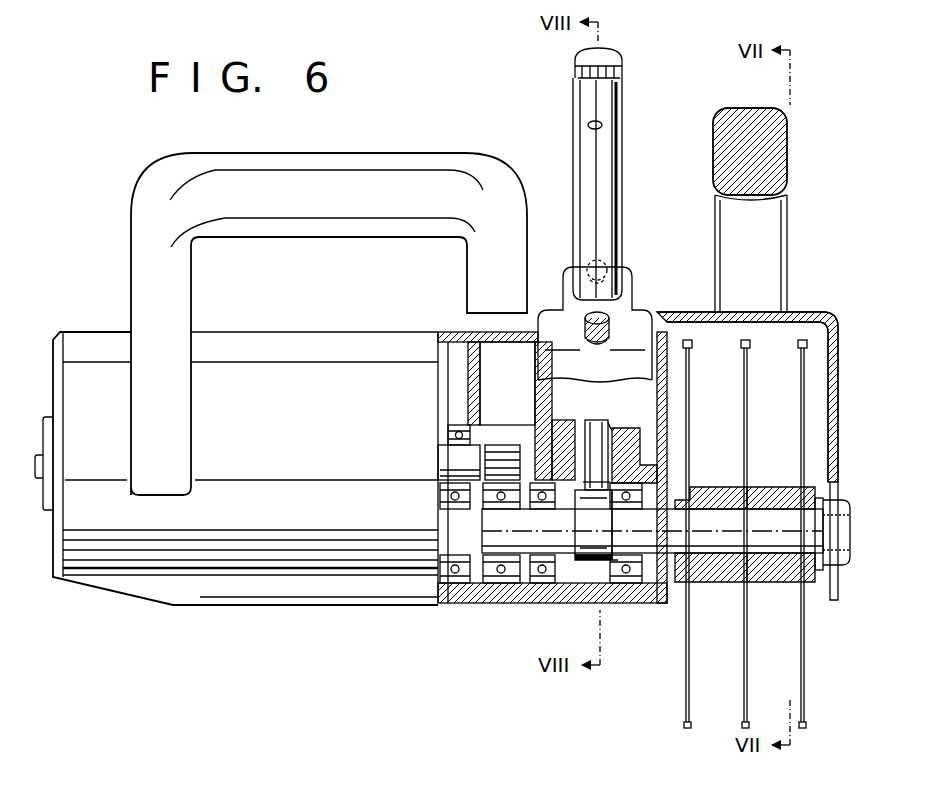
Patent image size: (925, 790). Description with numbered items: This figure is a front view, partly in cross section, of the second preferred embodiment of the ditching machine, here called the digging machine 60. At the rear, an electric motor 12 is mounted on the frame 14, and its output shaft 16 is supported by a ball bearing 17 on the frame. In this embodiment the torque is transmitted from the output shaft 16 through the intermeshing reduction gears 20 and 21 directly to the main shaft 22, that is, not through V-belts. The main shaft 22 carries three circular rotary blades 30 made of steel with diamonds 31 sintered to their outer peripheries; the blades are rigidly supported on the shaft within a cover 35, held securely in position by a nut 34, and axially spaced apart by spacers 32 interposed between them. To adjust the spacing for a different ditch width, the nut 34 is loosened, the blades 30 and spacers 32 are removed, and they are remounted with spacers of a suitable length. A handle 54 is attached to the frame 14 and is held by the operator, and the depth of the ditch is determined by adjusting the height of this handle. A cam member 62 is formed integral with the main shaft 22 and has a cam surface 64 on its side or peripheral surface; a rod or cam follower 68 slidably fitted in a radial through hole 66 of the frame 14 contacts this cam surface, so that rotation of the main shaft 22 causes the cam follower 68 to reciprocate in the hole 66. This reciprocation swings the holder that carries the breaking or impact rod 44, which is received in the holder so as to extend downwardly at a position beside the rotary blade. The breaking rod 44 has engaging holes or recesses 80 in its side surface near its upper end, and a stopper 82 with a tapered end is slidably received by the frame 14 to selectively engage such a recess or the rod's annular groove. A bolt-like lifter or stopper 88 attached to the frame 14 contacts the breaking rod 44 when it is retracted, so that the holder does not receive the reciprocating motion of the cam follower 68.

The electric motor 12 is at (335, 560).
The frame 14 is at (445, 600).
The output shaft 16 is at (446, 458).
The ball bearing 17 is at (455, 425).
The reduction gear 20 is at (505, 446).
The reduction gear 21 is at (501, 585).
The main shaft 22 is at (778, 550).
The rotary blades 30 is at (690, 392).
The diamonds 31 is at (692, 343).
The spacers 32 is at (690, 487).
The nut 34 is at (851, 518).
The cover 35 is at (815, 312).
The breaking rod 44 is at (618, 162).
The handle 54 is at (358, 178).
The digging machine 60 is at (795, 248).
The cam member 62 is at (614, 568).
The cam surface 64 is at (590, 568).
The radial through hole 66 is at (586, 440).
The cam follower 68 is at (612, 418).
The engaging hole 80 is at (602, 125).
The stopper 82 is at (612, 318).
The lifter 88 is at (610, 262).